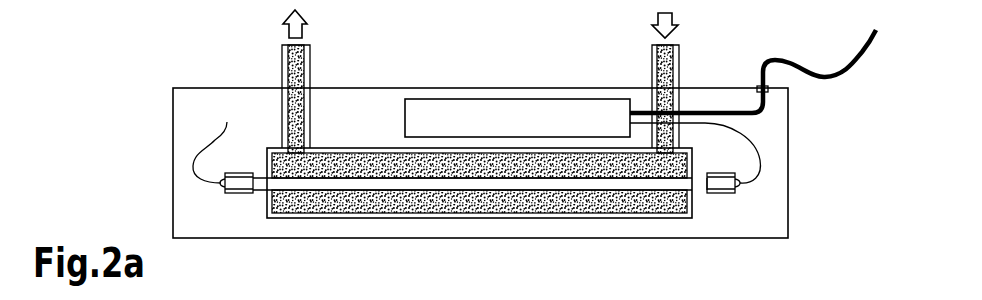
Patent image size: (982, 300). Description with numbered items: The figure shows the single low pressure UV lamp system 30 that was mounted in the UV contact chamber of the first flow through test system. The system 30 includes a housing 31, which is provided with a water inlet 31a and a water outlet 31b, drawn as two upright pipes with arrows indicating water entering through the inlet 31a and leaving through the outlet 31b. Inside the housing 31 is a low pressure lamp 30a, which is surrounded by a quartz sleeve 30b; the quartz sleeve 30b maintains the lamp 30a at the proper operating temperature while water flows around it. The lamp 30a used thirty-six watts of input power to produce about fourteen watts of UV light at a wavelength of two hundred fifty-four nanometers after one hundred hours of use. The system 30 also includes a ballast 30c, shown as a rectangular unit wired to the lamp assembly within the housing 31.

The single low pressure UV lamp system 30 is at (489, 67).
The low pressure lamp 30a is at (300, 185).
The quartz sleeve 30b is at (699, 192).
The ballast 30c is at (502, 125).
The housing 31 is at (788, 143).
The water inlet 31a is at (679, 77).
The water outlet 31b is at (310, 59).